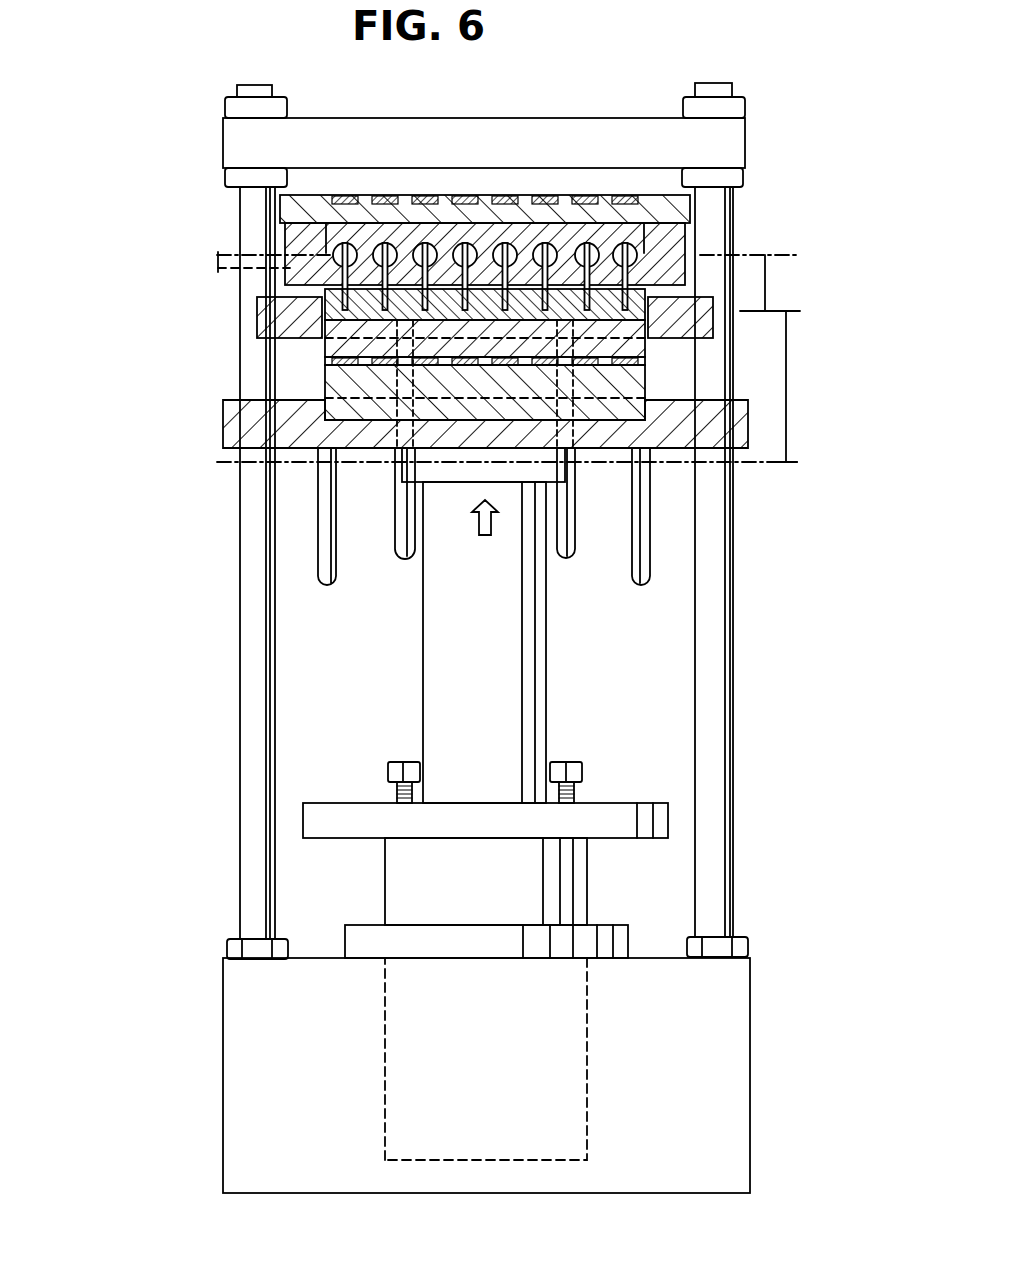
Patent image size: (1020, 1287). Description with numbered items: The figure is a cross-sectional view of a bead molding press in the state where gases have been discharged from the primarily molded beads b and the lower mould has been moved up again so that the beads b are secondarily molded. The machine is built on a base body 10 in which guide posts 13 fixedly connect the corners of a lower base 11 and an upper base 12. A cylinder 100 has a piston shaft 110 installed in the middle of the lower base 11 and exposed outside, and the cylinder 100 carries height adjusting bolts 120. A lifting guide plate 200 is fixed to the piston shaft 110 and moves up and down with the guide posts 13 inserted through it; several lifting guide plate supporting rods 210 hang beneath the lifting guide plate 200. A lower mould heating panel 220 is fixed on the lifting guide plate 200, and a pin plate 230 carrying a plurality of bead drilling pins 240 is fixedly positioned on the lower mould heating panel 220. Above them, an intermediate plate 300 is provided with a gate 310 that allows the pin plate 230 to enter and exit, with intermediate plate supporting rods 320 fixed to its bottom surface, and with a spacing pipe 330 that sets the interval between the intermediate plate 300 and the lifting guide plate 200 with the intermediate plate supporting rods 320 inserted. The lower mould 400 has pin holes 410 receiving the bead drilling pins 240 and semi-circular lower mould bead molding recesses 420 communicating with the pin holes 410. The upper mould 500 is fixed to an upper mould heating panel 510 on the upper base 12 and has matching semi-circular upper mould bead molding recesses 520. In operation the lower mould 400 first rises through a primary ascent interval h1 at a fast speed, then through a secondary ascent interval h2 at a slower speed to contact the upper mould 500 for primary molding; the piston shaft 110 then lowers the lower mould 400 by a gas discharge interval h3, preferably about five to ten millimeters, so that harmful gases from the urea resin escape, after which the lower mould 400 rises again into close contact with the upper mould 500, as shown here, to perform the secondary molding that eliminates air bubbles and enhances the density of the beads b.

The base body 10 is at (762, 528).
The lower base 11 is at (750, 1118).
The upper base 12 is at (740, 135).
The guide posts 13 is at (727, 767).
The cylinder 100 is at (385, 888).
The piston shaft 110 is at (423, 705).
The height adjusting bolts 120 is at (408, 764).
The lifting guide plate 200 is at (400, 384).
The lifting guide plate supporting rods 210 is at (320, 567).
The lower mould heating panel 220 is at (323, 365).
The pin plate 230 is at (263, 312).
The bead drilling pins 240 is at (263, 303).
The intermediate plate 300 is at (257, 323).
The gate 310 is at (325, 357).
The intermediate plate supporting rods 320 is at (393, 512).
The spacing pipe 330 is at (323, 428).
The lower mould 400 is at (287, 243).
The pin holes 410 is at (327, 258).
The lower mould bead molding recesses 420 is at (287, 268).
The upper mould 500 is at (675, 243).
The upper mould heating panel 510 is at (687, 208).
The upper mould bead molding recesses 520 is at (672, 250).
The beads b is at (448, 243).
The primary ascent interval h1 is at (787, 397).
The secondary ascent interval h2 is at (766, 283).
The gas discharge interval h3 is at (217, 262).